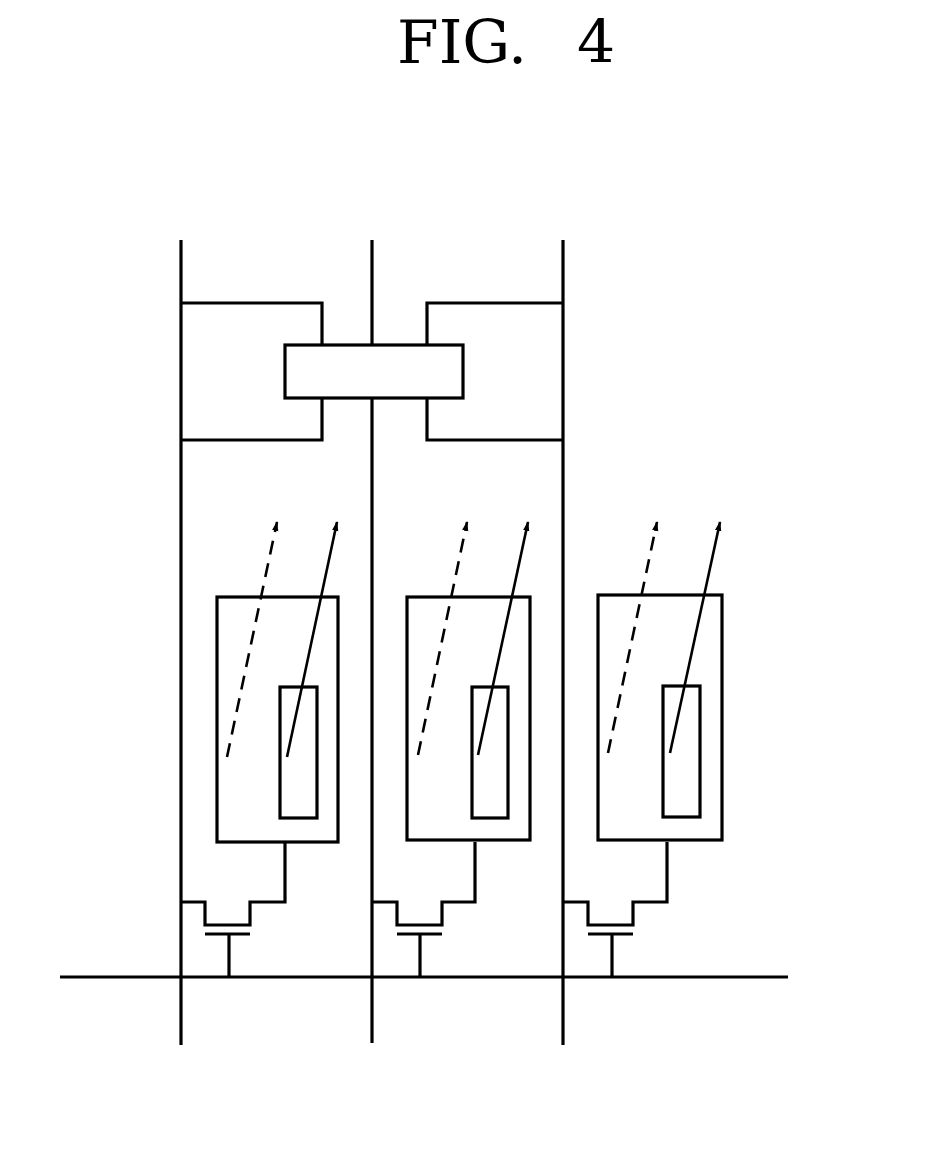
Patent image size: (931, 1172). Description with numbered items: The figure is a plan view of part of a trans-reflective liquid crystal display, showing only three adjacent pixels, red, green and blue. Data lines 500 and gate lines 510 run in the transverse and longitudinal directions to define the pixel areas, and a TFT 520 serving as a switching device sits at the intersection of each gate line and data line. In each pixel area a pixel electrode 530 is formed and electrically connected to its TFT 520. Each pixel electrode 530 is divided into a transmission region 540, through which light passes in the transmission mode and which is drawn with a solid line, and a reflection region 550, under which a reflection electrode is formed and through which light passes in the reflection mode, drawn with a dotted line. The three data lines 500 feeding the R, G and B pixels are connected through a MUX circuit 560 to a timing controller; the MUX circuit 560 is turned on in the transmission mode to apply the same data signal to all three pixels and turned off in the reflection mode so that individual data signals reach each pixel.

The data line 500 is at (181, 744).
The gate line 510 is at (107, 977).
The TFT 520 is at (252, 918).
The pixel electrode 530 is at (722, 652).
The transmission region 540 is at (688, 787).
The reflection region 550 is at (710, 718).
The MUX circuit 560 is at (463, 371).